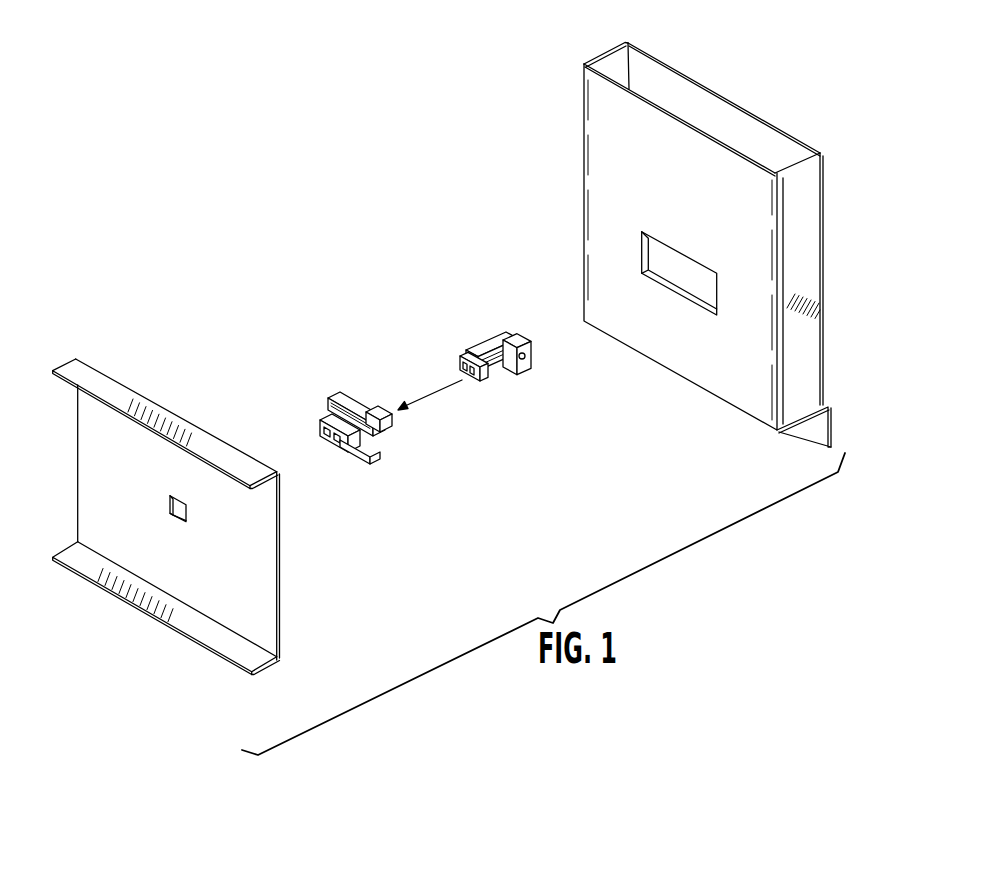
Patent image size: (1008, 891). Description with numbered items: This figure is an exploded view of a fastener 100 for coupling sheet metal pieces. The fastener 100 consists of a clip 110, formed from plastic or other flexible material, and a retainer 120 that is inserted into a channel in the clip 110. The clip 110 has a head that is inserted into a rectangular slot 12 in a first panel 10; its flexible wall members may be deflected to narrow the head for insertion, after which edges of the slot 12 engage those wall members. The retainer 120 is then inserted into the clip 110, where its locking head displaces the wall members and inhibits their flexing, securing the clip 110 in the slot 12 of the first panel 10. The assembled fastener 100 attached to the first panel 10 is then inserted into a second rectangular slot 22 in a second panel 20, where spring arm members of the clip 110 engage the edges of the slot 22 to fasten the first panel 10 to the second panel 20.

The first panel 10 is at (270, 615).
The rectangular slot 12 is at (188, 513).
The second panel 20 is at (822, 216).
The second rectangular slot 22 is at (668, 237).
The fastener 100 is at (466, 285).
The clip 110 is at (373, 444).
The retainer 120 is at (517, 364).